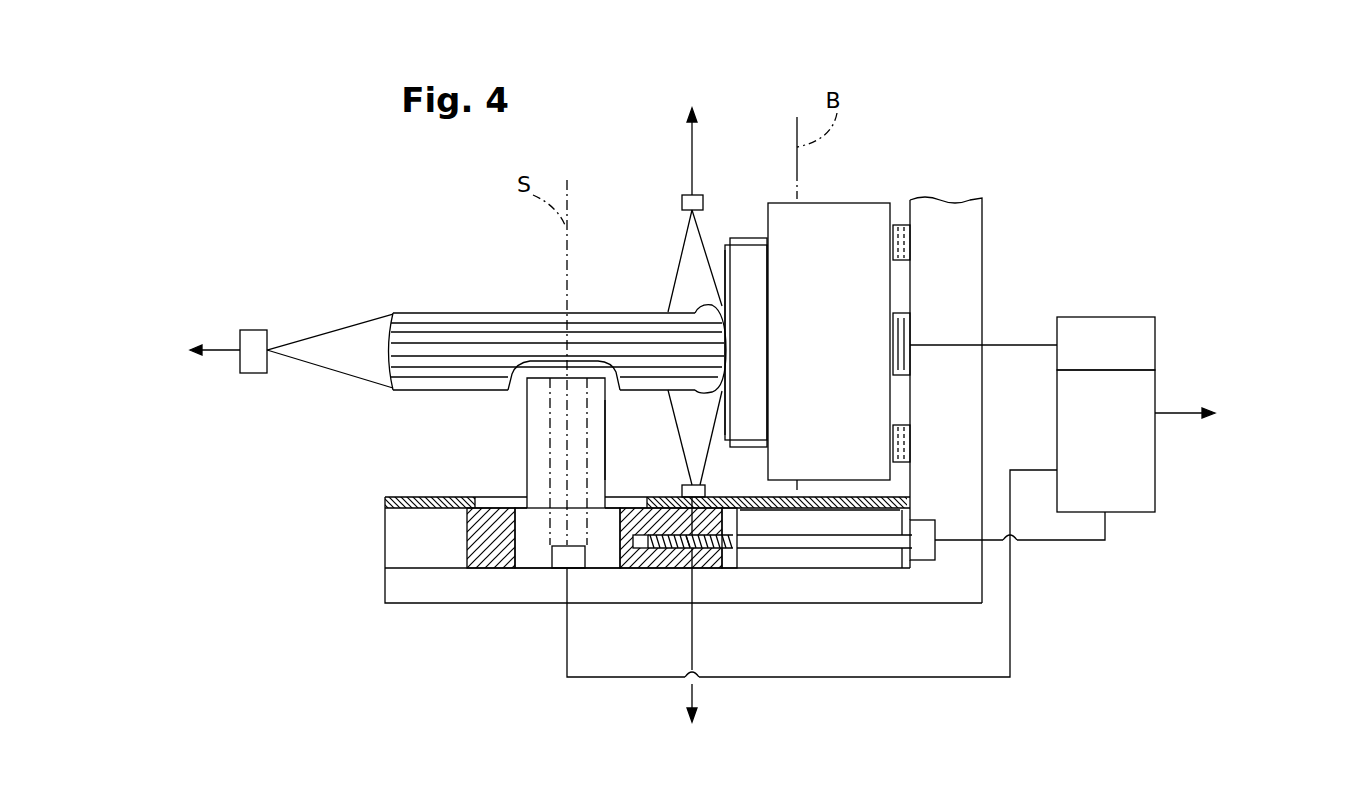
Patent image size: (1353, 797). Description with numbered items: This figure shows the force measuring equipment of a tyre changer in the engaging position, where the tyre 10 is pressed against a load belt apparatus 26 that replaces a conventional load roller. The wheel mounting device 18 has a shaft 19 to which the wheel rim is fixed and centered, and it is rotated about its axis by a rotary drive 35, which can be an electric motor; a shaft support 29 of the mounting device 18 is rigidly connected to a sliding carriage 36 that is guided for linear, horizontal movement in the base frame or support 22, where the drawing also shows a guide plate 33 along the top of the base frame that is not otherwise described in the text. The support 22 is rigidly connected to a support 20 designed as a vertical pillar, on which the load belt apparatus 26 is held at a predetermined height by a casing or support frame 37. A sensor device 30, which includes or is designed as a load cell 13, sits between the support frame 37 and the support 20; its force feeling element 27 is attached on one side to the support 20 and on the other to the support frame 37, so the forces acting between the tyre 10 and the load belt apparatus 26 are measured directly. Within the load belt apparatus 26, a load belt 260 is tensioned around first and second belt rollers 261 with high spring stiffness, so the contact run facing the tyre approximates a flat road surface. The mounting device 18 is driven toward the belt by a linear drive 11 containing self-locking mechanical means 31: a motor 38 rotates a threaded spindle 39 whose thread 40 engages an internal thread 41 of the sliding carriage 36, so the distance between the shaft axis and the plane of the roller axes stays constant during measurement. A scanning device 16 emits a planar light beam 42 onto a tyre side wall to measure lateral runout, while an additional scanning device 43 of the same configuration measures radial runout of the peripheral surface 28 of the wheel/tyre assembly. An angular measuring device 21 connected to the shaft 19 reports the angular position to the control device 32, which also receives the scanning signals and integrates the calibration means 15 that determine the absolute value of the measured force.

The tyre 10 is at (432, 318).
The linear drive 11 is at (786, 572).
The load cell 13 is at (898, 225).
The sensor device 30 is at (985, 304).
The calibration means 15 is at (1117, 363).
The scanning device 16 is at (682, 203).
The wheel mounting device 18 is at (514, 424).
The shaft 19 is at (562, 370).
The support 20 is at (975, 212).
The angular measuring device 21 is at (555, 565).
The support 22 is at (396, 588).
The load belt apparatus 26 is at (858, 102).
The force feeling element 27 is at (903, 335).
The peripheral surface 28 is at (383, 368).
The shaft support 29 is at (600, 427).
The self-locking mechanical means 31 is at (647, 567).
The control device 32 is at (1119, 451).
The guide plate 33 is at (492, 500).
The rotary drive 35 is at (604, 560).
The sliding carriage 36 is at (490, 560).
The support frame 37 is at (852, 203).
The motor 38 is at (928, 553).
The threaded spindle 39 is at (838, 545).
The thread 40 is at (729, 550).
The internal thread 41 is at (687, 548).
The planar light beam 42 is at (358, 318).
The scanning device 43 is at (251, 338).
The load belt 260 is at (720, 245).
The belt roller 261 is at (747, 238).